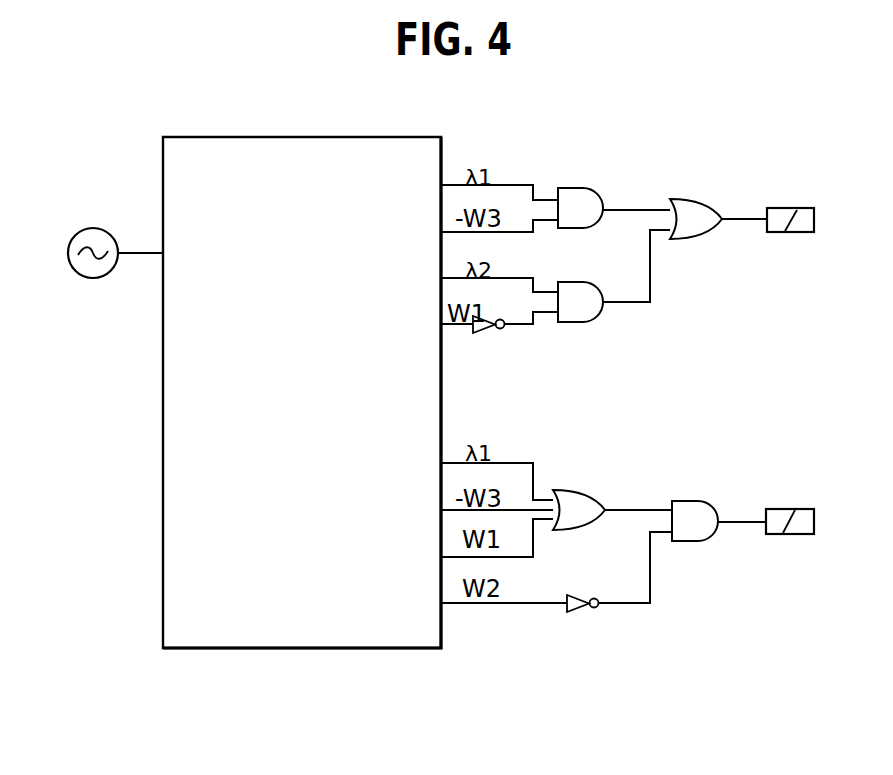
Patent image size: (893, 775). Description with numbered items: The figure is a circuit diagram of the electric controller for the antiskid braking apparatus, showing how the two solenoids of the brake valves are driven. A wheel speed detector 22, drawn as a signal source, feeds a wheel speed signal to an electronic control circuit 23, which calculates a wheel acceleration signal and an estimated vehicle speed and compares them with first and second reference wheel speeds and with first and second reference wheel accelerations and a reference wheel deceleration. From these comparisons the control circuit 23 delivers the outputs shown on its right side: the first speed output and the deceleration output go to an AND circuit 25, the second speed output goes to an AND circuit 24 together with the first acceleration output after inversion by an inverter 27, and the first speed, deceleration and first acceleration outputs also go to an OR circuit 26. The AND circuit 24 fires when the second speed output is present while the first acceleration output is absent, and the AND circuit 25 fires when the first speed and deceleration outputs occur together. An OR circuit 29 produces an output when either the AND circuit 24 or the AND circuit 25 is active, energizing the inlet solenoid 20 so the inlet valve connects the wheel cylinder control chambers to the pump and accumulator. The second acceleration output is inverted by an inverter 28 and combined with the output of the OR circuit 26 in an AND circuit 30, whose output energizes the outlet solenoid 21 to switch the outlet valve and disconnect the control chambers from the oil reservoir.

The inlet solenoid 20 is at (783, 207).
The outlet solenoid 21 is at (786, 508).
The wheel speed detector 22 is at (95, 233).
The electronic control circuit 23 is at (308, 147).
The AND circuit 24 is at (593, 313).
The AND circuit 25 is at (593, 223).
The OR circuit 26 is at (591, 521).
The inverter 27 is at (483, 329).
The inverter 28 is at (575, 608).
The OR circuit 29 is at (707, 233).
The AND circuit 30 is at (707, 532).